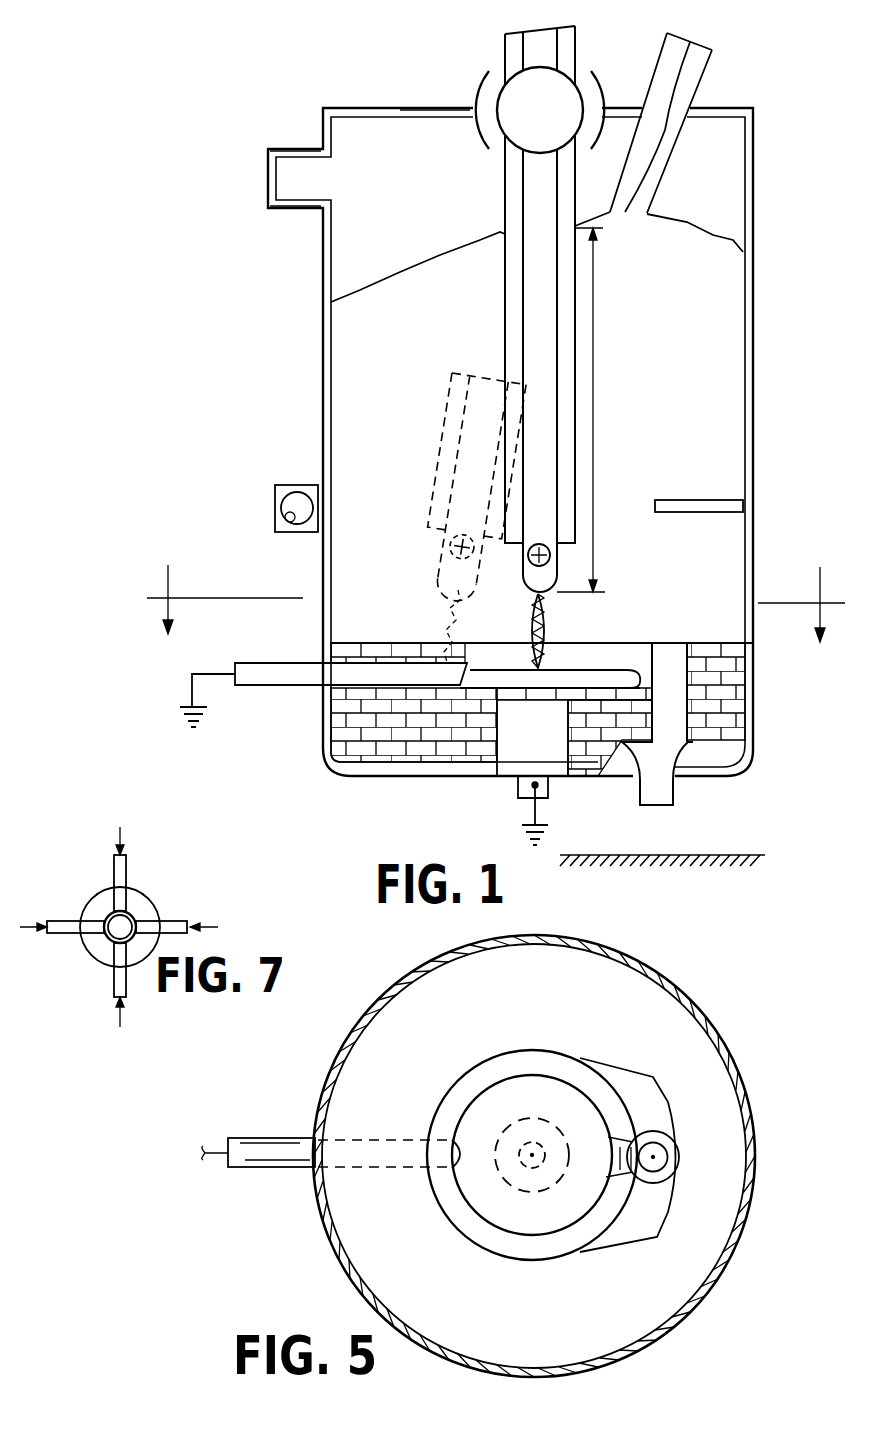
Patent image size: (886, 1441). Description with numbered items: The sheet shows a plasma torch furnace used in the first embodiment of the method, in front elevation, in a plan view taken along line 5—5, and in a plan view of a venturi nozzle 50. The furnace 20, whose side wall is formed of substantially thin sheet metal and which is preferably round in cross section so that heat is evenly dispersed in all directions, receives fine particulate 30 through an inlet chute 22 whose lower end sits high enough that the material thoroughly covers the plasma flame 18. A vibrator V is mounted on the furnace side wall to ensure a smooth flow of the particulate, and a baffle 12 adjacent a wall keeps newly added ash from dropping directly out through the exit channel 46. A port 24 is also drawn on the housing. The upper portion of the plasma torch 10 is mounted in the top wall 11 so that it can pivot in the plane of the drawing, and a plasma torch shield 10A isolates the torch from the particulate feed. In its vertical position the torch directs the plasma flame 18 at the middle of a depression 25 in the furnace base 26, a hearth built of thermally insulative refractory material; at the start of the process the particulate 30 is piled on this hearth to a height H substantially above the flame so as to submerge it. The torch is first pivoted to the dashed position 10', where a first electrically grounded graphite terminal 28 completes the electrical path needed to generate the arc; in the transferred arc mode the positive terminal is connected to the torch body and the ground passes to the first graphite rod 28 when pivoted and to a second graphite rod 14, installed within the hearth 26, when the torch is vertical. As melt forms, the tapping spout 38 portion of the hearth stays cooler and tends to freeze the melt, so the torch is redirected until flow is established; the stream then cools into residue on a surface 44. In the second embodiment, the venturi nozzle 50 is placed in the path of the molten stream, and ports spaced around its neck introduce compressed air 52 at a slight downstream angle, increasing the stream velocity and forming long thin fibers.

In FIG. 1, the plasma torch 10 is at (531, 309).
In FIG. 1, the plasma torch shield 10A is at (585, 54).
In FIG. 1, the pivoted torch position 10' is at (451, 512).
In FIG. 1, the top wall 11 is at (405, 108).
In FIG. 1, the baffle 12 is at (688, 500).
In FIG. 1, the second graphite rod 14 is at (512, 760).
In FIG. 1, the plasma flame 18 is at (553, 627).
In FIG. 1, the furnace 20 is at (322, 258).
In FIG. 5, the furnace 20 is at (343, 1042).
In FIG. 1, the inlet chute 22 is at (700, 76).
In FIG. 1, the gas port 24 is at (287, 149).
In FIG. 1, the depression 25 is at (490, 683).
In FIG. 1, the furnace base 26 is at (323, 722).
In FIG. 5, the furnace base 26 is at (353, 1223).
In FIG. 1, the first graphite rod 28 is at (278, 663).
In FIG. 5, the first graphite rod 28 is at (279, 1137).
In FIG. 1, the fine particulate 30 is at (397, 450).
In FIG. 1, the tapping spout 38 is at (627, 670).
In FIG. 5, the tapping spout 38 is at (557, 1062).
In FIG. 1, the surface 44 is at (713, 855).
In FIG. 1, the exit channel 46 is at (667, 702).
In FIG. 5, the exit channel 46 is at (662, 1143).
In FIG. 7, the venturi nozzle 50 is at (107, 902).
In FIG. 7, the compressed air 52 is at (126, 866).
In FIG. 1, the section line 5 is at (495, 603).
In FIG. 1, the vibrator V is at (275, 528).
In FIG. 1, the height H is at (581, 410).